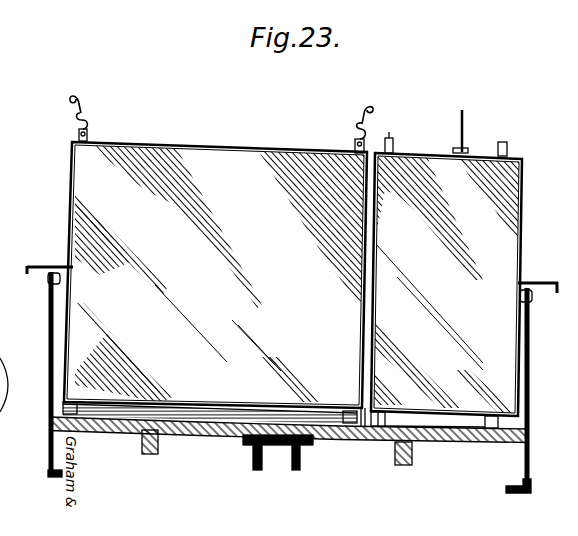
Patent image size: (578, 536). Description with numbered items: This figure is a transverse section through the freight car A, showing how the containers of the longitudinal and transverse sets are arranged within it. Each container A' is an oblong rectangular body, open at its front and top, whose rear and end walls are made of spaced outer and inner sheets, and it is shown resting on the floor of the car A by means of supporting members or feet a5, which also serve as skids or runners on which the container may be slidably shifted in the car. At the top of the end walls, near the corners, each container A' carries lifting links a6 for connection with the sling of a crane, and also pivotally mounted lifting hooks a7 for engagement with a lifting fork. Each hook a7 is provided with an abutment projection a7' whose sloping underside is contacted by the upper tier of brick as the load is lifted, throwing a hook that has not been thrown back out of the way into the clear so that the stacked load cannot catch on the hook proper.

The freight car A is at (283, 379).
The container A' is at (287, 284).
The supporting members or feet a5 is at (217, 408).
The lifting links a6 is at (88, 133).
The lifting hooks a7 is at (269, 122).
The abutment projection a7' is at (199, 130).